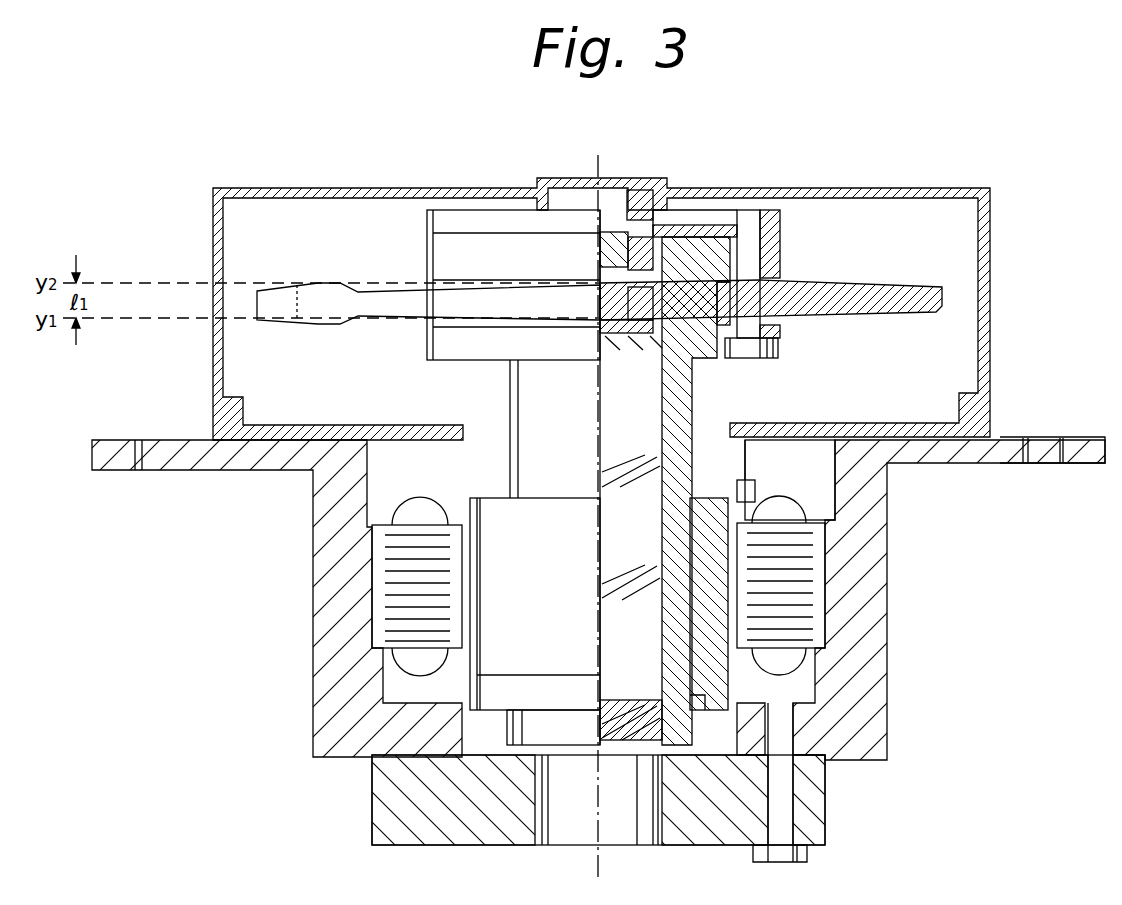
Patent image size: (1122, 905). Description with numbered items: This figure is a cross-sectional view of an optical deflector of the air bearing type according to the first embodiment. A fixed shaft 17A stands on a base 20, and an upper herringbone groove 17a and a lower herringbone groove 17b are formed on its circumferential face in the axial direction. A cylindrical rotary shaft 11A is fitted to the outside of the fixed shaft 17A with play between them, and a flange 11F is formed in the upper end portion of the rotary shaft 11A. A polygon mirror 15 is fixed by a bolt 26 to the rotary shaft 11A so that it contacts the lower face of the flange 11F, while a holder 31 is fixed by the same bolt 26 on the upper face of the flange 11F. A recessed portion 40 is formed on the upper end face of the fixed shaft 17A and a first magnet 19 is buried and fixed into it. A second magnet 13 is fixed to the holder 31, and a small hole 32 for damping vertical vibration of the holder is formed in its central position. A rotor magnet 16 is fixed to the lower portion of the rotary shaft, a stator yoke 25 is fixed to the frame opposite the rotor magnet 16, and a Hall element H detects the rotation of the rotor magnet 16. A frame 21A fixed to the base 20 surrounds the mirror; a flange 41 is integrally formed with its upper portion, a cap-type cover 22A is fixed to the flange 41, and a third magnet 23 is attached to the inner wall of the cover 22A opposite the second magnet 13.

The cover 22A is at (262, 190).
The frame 21A is at (858, 577).
The base 20 is at (480, 822).
The flange 41 is at (1085, 438).
The bolt 26 is at (768, 306).
The rotary shaft 11A is at (683, 407).
The recessed portion 40 is at (665, 308).
The flange 11F is at (785, 238).
The holder 31 is at (737, 212).
The rotor magnet 16 is at (715, 630).
The stator yoke 25 is at (807, 543).
The Hall element H is at (757, 486).
The first magnet 19 is at (603, 300).
The fixed shaft 17A is at (620, 425).
The lower herringbone groove 17b is at (620, 677).
The upper herringbone groove 17a is at (627, 357).
The small hole 32 is at (598, 233).
The second magnet 13 is at (667, 232).
The third magnet 23 is at (650, 200).
The polygon mirror 15 is at (880, 290).